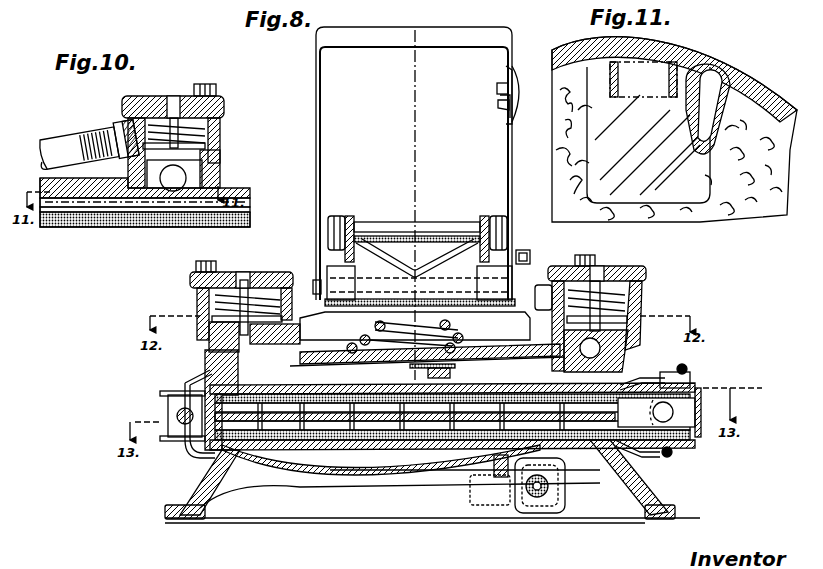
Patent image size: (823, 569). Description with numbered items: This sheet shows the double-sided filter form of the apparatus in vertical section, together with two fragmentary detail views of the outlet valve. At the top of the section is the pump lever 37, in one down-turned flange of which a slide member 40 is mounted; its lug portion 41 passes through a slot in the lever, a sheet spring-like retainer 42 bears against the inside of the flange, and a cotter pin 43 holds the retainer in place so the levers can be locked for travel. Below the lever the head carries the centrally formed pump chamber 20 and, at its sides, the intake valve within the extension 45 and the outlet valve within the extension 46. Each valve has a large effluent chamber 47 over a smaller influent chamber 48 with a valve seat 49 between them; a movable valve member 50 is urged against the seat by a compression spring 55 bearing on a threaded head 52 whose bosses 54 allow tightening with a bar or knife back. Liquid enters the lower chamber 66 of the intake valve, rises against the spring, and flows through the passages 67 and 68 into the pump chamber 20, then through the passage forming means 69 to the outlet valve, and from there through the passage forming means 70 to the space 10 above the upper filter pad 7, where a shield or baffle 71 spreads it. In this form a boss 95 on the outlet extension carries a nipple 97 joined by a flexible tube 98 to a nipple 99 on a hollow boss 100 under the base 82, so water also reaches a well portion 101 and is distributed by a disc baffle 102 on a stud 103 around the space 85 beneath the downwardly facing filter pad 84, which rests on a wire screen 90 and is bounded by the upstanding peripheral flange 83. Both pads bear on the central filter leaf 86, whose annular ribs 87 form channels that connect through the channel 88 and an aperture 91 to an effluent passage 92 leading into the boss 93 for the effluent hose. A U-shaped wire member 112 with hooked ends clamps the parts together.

In FIG. 8, the filter pad 7 is at (560, 354).
In FIG. 8, the central space 10 is at (434, 372).
In FIG. 8, the pump chamber 20 is at (415, 331).
In FIG. 8, the lever 37 is at (437, 48).
In FIG. 8, the slide member 40 is at (522, 80).
In FIG. 8, the lug portion 41 is at (496, 88).
In FIG. 8, the sheet spring-like retainer 42 is at (506, 113).
In FIG. 8, the cotter pin 43 is at (498, 106).
In FIG. 8, the extension 45 is at (640, 312).
In FIG. 8, the extension 46 is at (205, 296).
In FIG. 10, the extension 46 is at (222, 140).
In FIG. 8, the effluent chamber 47 is at (205, 306).
In FIG. 10, the effluent chamber 47 is at (224, 120).
In FIG. 8, the influent chamber 48 is at (214, 383).
In FIG. 10, the influent chamber 48 is at (224, 172).
In FIG. 8, the valve seat 49 is at (632, 322).
In FIG. 10, the valve seat 49 is at (222, 158).
In FIG. 8, the movable valve member 50 is at (292, 300).
In FIG. 8, the head 52 is at (232, 274).
In FIG. 10, the head 52 is at (225, 102).
In FIG. 8, the bosses 54 is at (198, 262).
In FIG. 10, the bosses 54 is at (212, 85).
In FIG. 8, the compression spring 55 is at (258, 298).
In FIG. 10, the compression spring 55 is at (186, 125).
In FIG. 8, the lower chamber 66 is at (630, 345).
In FIG. 8, the passage 67 is at (576, 268).
In FIG. 8, the passage 68 is at (490, 355).
In FIG. 8, the passage forming means 69 is at (318, 348).
In FIG. 10, the passage forming means 70 is at (130, 190).
In FIG. 11, the passage forming means 70 is at (708, 80).
In FIG. 8, the shield or baffle 71 is at (240, 360).
In FIG. 10, the shield or baffle 71 is at (55, 226).
In FIG. 11, the shield or baffle 71 is at (700, 195).
In FIG. 8, the base 82 is at (645, 496).
In FIG. 8, the upstanding peripheral flange 83 is at (212, 460).
In FIG. 8, the filter pad 84 is at (272, 456).
In FIG. 8, the space 85 is at (308, 490).
In FIG. 8, the filter leaf 86 is at (185, 440).
In FIG. 8, the annular ribs 87 is at (368, 440).
In FIG. 8, the channel 88 is at (658, 462).
In FIG. 8, the woven wire screen 90 is at (350, 460).
In FIG. 8, the aperture 91 is at (672, 454).
In FIG. 8, the effluent passage 92 is at (680, 386).
In FIG. 8, the boss 93 is at (700, 380).
In FIG. 10, the boss 95 is at (96, 125).
In FIG. 10, the nipple 97 is at (93, 126).
In FIG. 8, the flexible tube or hose 98 is at (546, 496).
In FIG. 10, the flexible tube or hose 98 is at (59, 132).
In FIG. 8, the nipple 99 is at (528, 497).
In FIG. 8, the hollow boss 100 is at (566, 497).
In FIG. 8, the well portion 101 is at (478, 470).
In FIG. 8, the baffle 102 is at (465, 472).
In FIG. 8, the stud 103 is at (507, 470).
In FIG. 8, the U-shaped wire member 112 is at (690, 370).